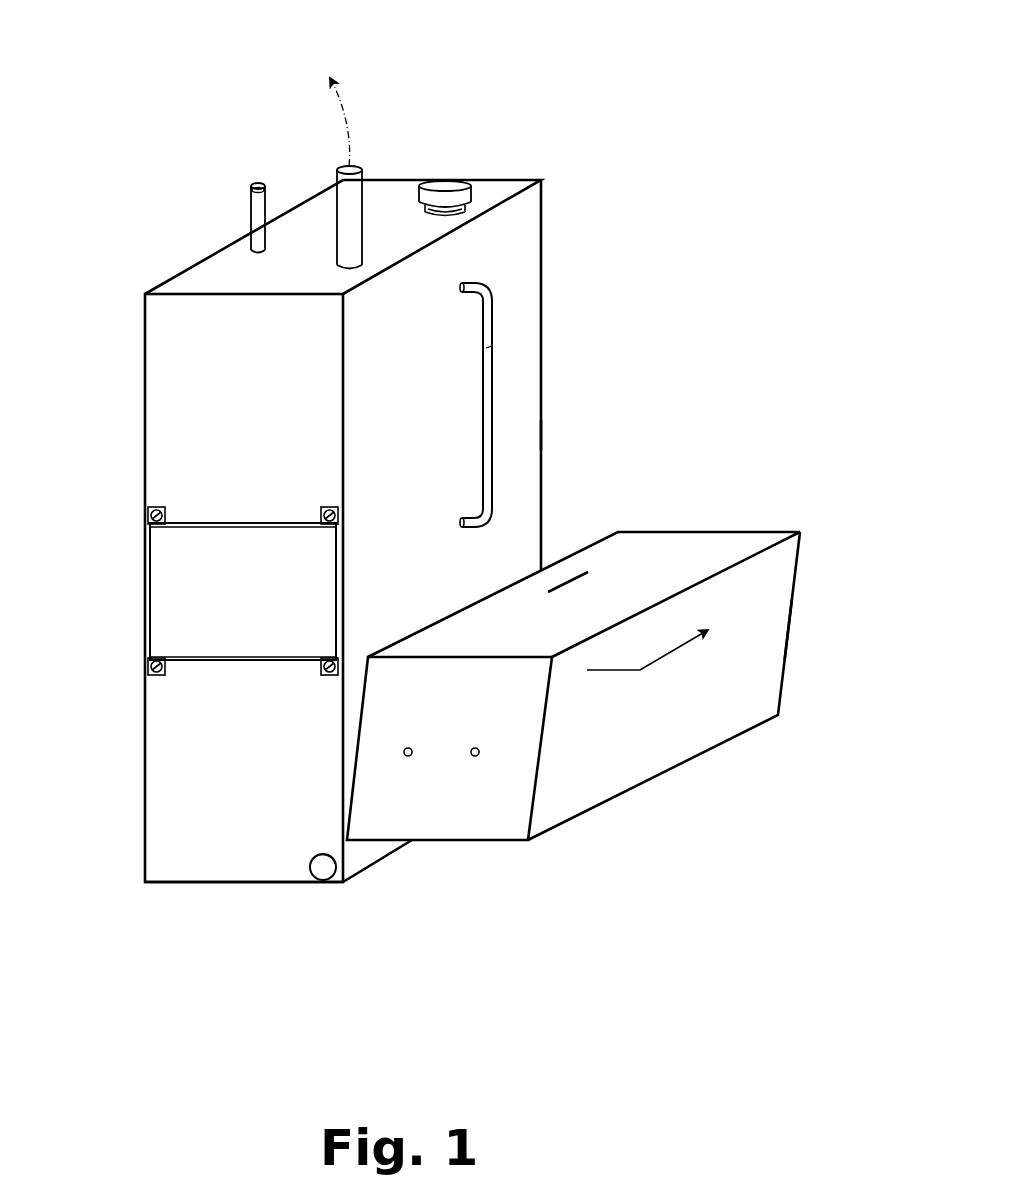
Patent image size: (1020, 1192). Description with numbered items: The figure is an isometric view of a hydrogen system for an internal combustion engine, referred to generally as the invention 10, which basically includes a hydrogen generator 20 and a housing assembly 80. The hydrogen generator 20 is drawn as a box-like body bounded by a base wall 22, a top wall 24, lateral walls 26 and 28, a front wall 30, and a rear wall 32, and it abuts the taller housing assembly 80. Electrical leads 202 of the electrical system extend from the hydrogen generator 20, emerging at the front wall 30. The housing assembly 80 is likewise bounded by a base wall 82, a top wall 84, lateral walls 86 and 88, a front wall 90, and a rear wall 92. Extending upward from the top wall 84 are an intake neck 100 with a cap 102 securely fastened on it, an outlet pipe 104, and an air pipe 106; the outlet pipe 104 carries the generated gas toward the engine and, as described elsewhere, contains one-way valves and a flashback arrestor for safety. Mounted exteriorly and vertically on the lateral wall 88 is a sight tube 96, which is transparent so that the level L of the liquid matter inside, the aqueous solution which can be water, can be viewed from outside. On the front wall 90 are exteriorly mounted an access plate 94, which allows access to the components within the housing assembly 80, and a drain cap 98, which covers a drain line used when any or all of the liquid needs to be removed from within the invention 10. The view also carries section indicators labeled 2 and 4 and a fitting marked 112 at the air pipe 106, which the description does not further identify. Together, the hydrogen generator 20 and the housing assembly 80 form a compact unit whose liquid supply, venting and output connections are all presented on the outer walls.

The hydrogen system for internal combustion engine 10 is at (748, 118).
The hydrogen generator 20 is at (680, 520).
The base wall 22 is at (440, 840).
The top wall 24 is at (610, 589).
The lateral wall 26 is at (563, 540).
The lateral wall 28 is at (735, 693).
The front wall 30 is at (465, 749).
The rear wall 32 is at (790, 665).
The electrical leads 202 is at (412, 756).
The section line 2 is at (800, 527).
The section line 4 is at (30, 670).
The housing assembly 80 is at (135, 323).
The base wall 82 is at (165, 882).
The top wall 84 is at (207, 268).
The lateral wall 86 is at (145, 466).
The lateral wall 88 is at (541, 267).
The front wall 90 is at (318, 394).
The rear wall 92 is at (541, 437).
The access plate 94 is at (245, 652).
The sight tube 96 is at (492, 390).
The drain cap 98 is at (323, 867).
The intake neck 100 is at (465, 207).
The cap 102 is at (472, 192).
The outlet pipe 104 is at (368, 180).
The air pipe 106 is at (250, 208).
The pipe fitting 112 is at (255, 185).
The level L is at (490, 350).